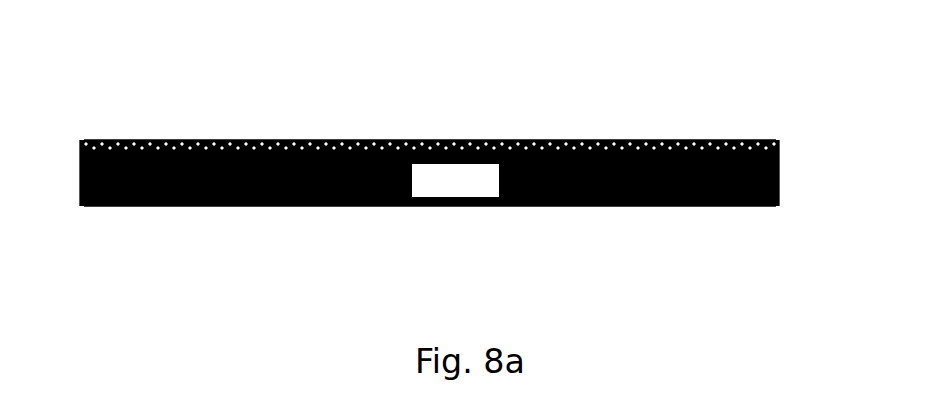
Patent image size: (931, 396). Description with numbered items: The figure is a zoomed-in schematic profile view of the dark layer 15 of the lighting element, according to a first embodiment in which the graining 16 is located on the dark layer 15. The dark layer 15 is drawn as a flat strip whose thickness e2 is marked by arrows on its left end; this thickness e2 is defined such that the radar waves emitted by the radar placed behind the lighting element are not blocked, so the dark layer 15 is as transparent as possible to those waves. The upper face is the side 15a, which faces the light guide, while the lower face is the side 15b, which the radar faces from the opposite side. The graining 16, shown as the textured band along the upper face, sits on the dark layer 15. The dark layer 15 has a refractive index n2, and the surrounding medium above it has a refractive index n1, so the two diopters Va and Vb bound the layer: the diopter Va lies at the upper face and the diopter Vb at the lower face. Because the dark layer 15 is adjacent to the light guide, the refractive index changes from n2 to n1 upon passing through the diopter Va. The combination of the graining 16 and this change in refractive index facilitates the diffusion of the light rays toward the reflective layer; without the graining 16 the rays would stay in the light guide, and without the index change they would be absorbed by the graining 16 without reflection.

The dark layer 15 is at (728, 138).
The side of the dark layer 15a is at (287, 139).
The side of the dark layer 15b is at (287, 207).
The graining 16 is at (781, 146).
The thickness e2 is at (82, 253).
The diopter Va is at (653, 140).
The diopter Vb is at (637, 206).
The refractive index n1 is at (456, 92).
The refractive index n2 is at (455, 180).